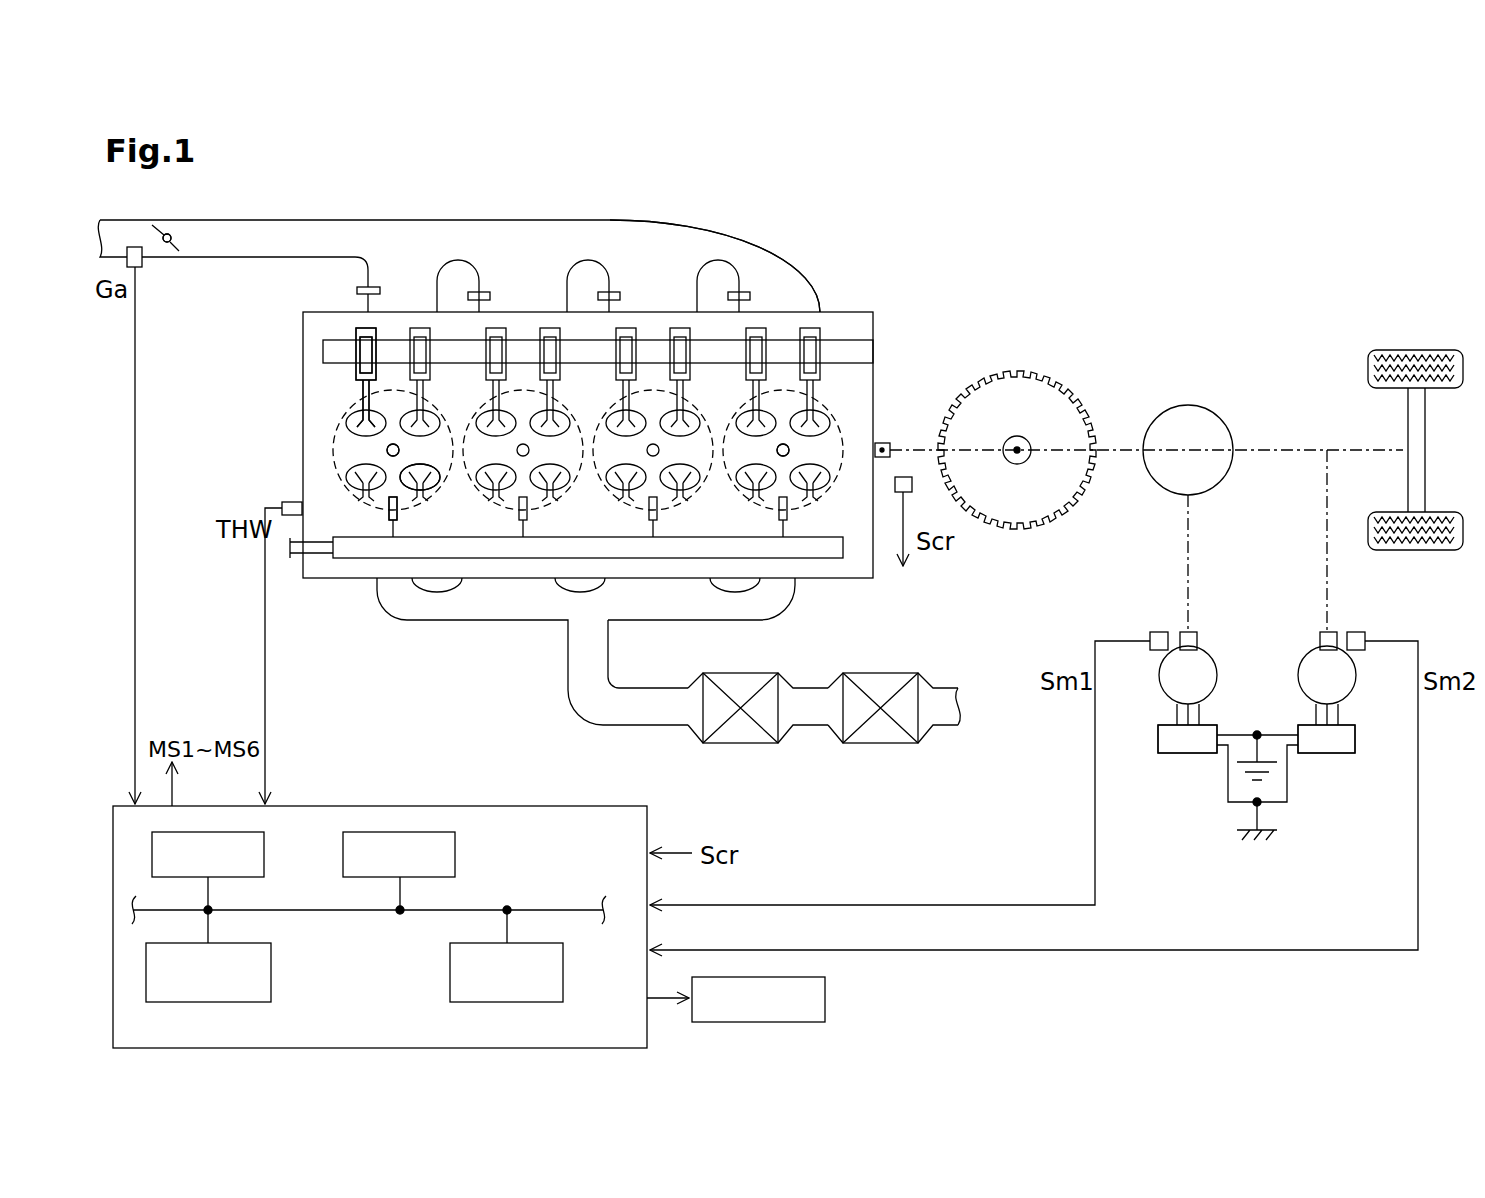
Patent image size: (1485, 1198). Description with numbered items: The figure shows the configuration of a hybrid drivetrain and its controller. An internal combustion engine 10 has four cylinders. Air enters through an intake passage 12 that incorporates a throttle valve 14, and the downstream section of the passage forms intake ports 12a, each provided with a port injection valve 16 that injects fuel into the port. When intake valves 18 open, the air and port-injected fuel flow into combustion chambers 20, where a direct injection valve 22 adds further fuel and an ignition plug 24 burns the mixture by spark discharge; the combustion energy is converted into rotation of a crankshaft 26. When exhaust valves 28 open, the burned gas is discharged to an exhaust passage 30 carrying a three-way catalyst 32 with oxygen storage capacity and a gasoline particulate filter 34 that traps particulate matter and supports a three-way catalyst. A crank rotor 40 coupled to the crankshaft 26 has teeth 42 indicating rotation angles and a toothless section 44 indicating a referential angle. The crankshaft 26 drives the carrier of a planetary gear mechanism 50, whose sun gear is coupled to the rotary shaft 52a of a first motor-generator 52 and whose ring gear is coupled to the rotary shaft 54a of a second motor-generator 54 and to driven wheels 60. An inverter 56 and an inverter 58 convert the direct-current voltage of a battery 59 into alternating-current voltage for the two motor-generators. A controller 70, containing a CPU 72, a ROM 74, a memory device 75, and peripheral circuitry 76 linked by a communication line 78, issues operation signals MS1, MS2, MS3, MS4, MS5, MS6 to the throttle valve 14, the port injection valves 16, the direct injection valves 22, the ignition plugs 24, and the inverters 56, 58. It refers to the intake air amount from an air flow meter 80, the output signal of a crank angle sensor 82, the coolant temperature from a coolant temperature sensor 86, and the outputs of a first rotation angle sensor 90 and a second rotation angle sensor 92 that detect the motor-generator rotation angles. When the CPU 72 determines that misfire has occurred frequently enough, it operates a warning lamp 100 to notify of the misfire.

The internal combustion engine 10 is at (874, 290).
The intake passage 12 is at (127, 222).
The intake ports 12a is at (806, 280).
The throttle valve 14 is at (172, 236).
The port injection valve 16 is at (728, 296).
The intake valves 18 is at (362, 398).
The combustion chambers 20 is at (338, 446).
The direct injection valve 22 is at (398, 512).
The ignition plug 24 is at (400, 450).
The crankshaft 26 is at (885, 442).
The exhaust valves 28 is at (426, 488).
The exhaust passage 30 is at (662, 621).
The three-way catalyst 32 is at (742, 673).
The gasoline particulate filter (GPF) 34 is at (884, 673).
The crank rotor 40 is at (1041, 416).
The teeth 42 is at (1082, 404).
The toothless section 44 is at (1090, 420).
The planetary gear mechanism 50 is at (1230, 420).
The first motor-generator 52 is at (1159, 676).
The rotary shaft of the first motor-generator 52a is at (1198, 640).
The second motor-generator 54 is at (1357, 676).
The rotary shaft of the second motor-generator 54a is at (1322, 631).
The inverter 56 is at (1160, 755).
The inverter 58 is at (1357, 755).
The battery 59 is at (1268, 760).
The driven wheels 60 is at (1462, 548).
The controller 70 is at (380, 900).
The central processing unit (CPU) 72 is at (266, 860).
The read-only memory (ROM) 74 is at (457, 860).
The memory device 75 is at (564, 976).
The peripheral circuitry 76 is at (272, 976).
The communication line 78 is at (556, 909).
The air flow meter 80 is at (143, 265).
The crank angle sensor 82 is at (912, 491).
The coolant temperature sensor 86 is at (283, 503).
The first rotation angle sensor 90 is at (1158, 631).
The second rotation angle sensor 92 is at (1356, 631).
The warning lamp 100 is at (826, 1000).
The operation signal MS1 is at (171, 233).
The operation signal MS2 is at (355, 290).
The operation signal MS3 is at (388, 514).
The operation signal MS4 is at (792, 450).
The operation signal MS5 is at (1188, 755).
The operation signal MS6 is at (1327, 755).